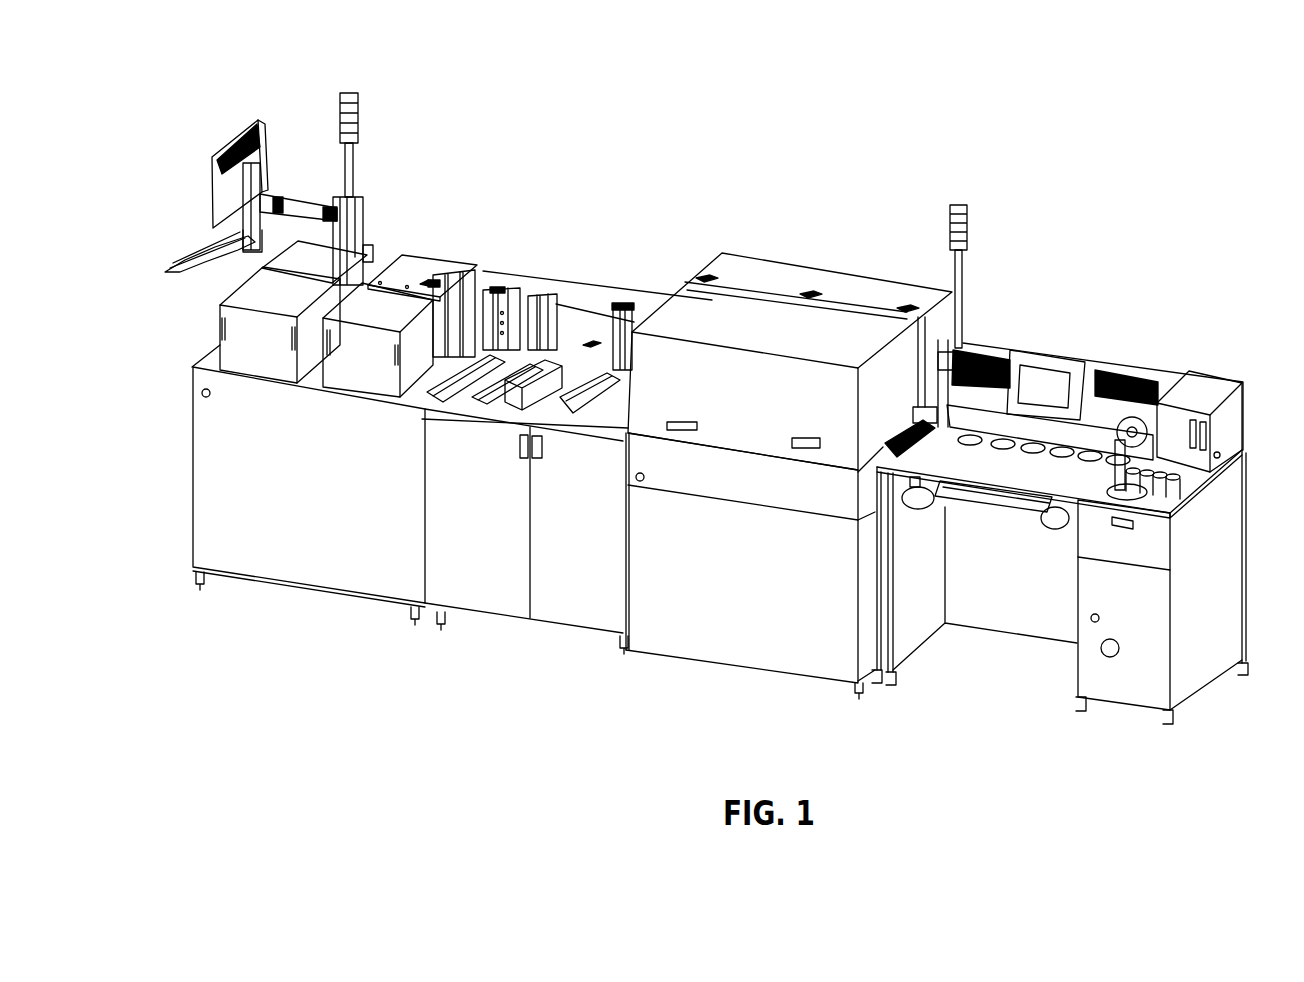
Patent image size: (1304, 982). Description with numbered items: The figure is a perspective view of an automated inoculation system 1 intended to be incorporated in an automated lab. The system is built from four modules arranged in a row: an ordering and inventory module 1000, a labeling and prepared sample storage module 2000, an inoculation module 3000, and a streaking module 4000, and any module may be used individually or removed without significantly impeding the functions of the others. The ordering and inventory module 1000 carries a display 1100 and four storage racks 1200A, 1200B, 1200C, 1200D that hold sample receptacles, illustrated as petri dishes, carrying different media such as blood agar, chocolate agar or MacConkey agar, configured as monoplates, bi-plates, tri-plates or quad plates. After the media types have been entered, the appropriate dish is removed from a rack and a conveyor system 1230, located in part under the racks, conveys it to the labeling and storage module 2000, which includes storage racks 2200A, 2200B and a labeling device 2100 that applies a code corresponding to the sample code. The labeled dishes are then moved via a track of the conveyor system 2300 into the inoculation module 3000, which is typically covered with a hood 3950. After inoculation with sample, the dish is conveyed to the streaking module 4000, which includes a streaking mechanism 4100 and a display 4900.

The automated inoculation system 1 is at (97, 124).
The ordering and inventory module 1000 is at (178, 507).
The display 1100 is at (243, 138).
The storage rack 1200A is at (418, 272).
The storage rack 1200B is at (473, 270).
The storage rack 1200C is at (222, 313).
The storage rack 1200D is at (370, 272).
The conveyor system 1230 is at (700, 278).
The labeling and prepared sample storage module 2000 is at (492, 628).
The labeling device 2100 is at (507, 400).
The storage rack 2200A is at (493, 290).
The storage rack 2200B is at (548, 330).
The conveyor system 2300 is at (662, 427).
The inoculation module 3000 is at (737, 678).
The hood 3950 is at (803, 335).
The streaking module 4000 is at (997, 678).
The streaking mechanism 4100 is at (1170, 378).
The display 4900 is at (1048, 365).